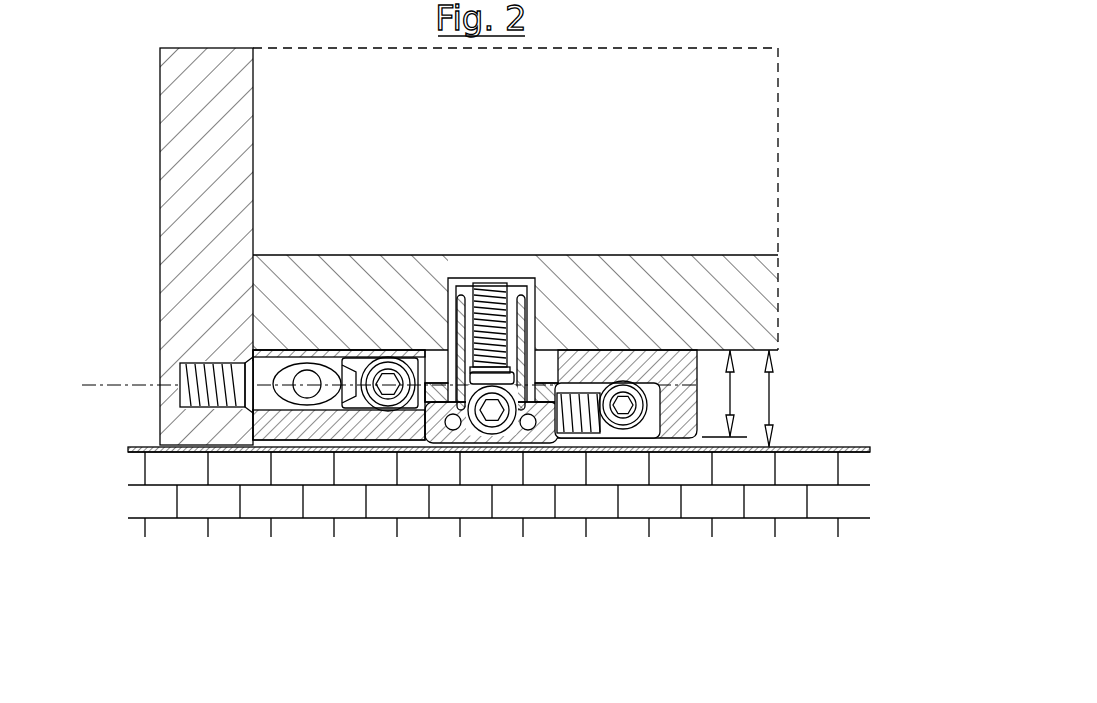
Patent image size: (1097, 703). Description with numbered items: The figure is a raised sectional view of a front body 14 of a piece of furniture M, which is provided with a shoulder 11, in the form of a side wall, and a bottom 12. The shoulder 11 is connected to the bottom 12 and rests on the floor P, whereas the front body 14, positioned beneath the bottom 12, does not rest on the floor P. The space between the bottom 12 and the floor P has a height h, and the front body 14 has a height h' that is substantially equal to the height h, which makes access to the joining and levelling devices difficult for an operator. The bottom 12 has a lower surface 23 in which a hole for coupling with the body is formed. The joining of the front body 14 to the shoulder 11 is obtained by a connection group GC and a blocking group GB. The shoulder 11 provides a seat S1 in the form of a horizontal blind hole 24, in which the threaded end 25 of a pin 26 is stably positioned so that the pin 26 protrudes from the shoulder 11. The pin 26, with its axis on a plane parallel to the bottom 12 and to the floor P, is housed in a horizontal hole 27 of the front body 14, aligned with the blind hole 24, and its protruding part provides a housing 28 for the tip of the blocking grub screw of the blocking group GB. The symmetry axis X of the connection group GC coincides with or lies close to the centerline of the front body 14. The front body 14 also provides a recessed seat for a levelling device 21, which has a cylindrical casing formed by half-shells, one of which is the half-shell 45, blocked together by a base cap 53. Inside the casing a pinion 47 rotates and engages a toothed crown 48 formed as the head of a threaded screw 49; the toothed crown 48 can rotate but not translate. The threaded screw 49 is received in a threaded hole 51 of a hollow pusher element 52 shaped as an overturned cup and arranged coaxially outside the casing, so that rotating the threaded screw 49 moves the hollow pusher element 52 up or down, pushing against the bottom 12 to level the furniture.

The shoulder 11 is at (192, 175).
The bottom 12 is at (709, 315).
The front body 14 is at (722, 465).
The levelling device 21 is at (513, 355).
The lower surface 23 is at (782, 368).
The horizontal blind hole 24 is at (200, 395).
The threaded end 25 is at (208, 363).
The pin 26 is at (339, 265).
The horizontal hole 27 is at (345, 357).
The housing 28 is at (307, 372).
The half-shell 45 is at (443, 432).
The pinion 47 is at (494, 434).
The toothed crown 48 is at (528, 440).
The threaded screw 49 is at (488, 295).
The threaded hole 51 is at (505, 315).
The hollow pusher element 52 is at (460, 283).
The base cap 53 is at (555, 440).
The symmetry axis X is at (98, 383).
The seat S1 is at (178, 382).
The connection group GC is at (230, 417).
The blocking group GB is at (385, 417).
The floor P is at (695, 490).
The piece of furniture M is at (753, 165).
The height h is at (848, 398).
The height h' is at (799, 393).